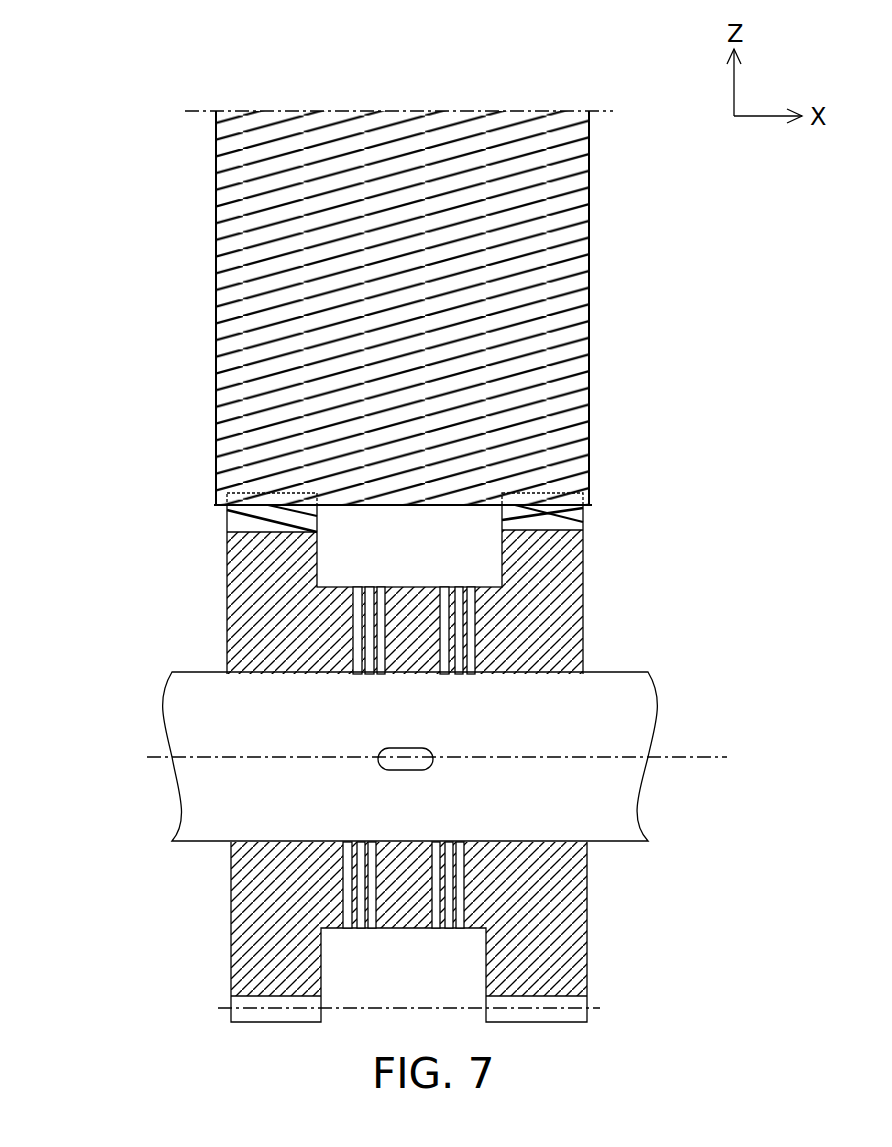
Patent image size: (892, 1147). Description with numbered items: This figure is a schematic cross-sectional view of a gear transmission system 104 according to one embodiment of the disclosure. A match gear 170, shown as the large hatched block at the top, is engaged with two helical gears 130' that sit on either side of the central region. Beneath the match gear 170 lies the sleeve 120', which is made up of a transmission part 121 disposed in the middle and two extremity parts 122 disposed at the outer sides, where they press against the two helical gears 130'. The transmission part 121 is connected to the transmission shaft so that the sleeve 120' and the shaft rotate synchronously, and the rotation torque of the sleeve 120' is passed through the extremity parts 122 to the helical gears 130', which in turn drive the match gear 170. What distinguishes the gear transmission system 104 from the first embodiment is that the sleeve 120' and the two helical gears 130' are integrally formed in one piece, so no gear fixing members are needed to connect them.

The gear transmission system 104 is at (72, 37).
The match gear 170 is at (567, 418).
The sleeve 120' is at (495, 553).
The transmission part 121 is at (417, 607).
The extremity part 122 is at (343, 587).
The helical gear 130' is at (422, 589).